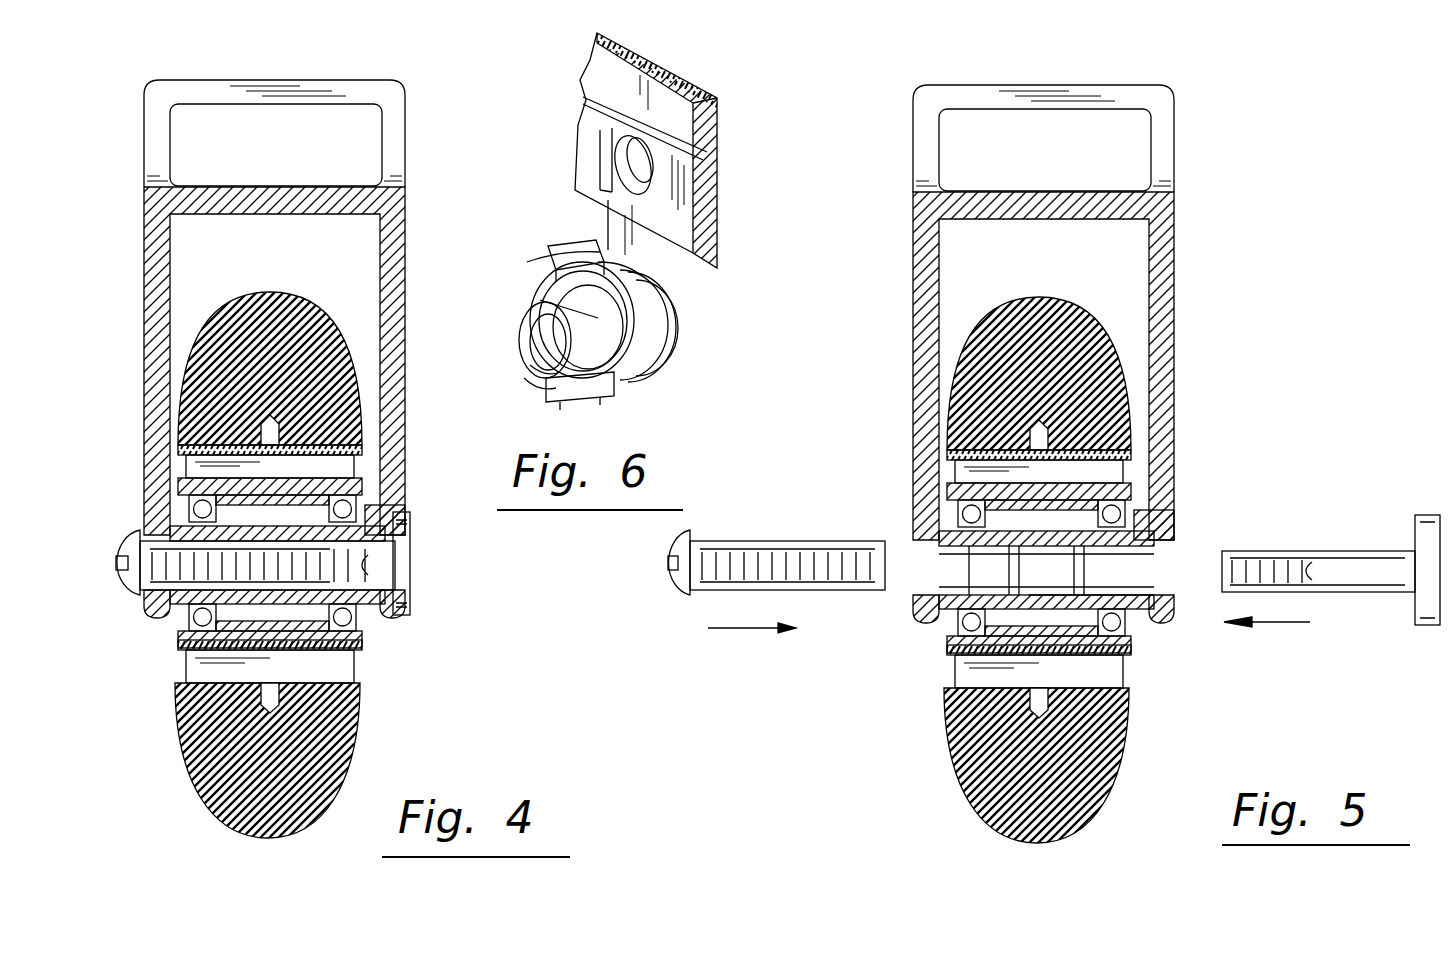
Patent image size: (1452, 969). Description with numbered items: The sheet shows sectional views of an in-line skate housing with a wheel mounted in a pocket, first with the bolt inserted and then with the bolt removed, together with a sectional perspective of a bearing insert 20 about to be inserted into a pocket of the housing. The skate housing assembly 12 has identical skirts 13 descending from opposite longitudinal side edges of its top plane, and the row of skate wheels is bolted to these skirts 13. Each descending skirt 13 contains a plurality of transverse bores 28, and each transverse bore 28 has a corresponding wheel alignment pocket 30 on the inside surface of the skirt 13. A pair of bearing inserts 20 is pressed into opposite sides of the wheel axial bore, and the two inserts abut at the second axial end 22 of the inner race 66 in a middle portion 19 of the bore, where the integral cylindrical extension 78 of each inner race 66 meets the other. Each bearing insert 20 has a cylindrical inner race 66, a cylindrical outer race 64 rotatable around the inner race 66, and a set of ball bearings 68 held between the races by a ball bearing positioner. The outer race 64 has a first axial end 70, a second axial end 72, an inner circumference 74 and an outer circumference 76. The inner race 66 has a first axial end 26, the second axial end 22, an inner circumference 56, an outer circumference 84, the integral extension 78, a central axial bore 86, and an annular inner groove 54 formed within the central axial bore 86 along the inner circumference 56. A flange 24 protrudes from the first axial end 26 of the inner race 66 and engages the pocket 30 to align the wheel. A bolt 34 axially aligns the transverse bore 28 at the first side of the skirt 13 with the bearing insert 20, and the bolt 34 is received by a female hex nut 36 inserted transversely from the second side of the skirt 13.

In FIG. 6, the skate housing assembly 12 is at (652, 60).
In FIG. 6, the skirt 13 is at (712, 138).
In FIG. 5, the middle portion 19 is at (1091, 614).
In FIG. 6, the bearing insert 20 is at (640, 386).
In FIG. 6, the second axial end 22 is at (512, 335).
In FIG. 6, the flange 24 is at (662, 330).
In FIG. 6, the first axial end 26 is at (657, 345).
In FIG. 6, the transverse bore 28 is at (612, 160).
In FIG. 6, the wheel alignment pocket 30 is at (612, 177).
In FIG. 4, the bolt 34 is at (137, 540).
In FIG. 5, the bolt 34 is at (838, 548).
In FIG. 4, the female hex nut 36 is at (411, 549).
In FIG. 5, the female hex nut 36 is at (1325, 552).
In FIG. 5, the annular inner groove 54 is at (1046, 550).
In FIG. 6, the annular inner groove 54 is at (540, 353).
In FIG. 6, the inner circumference 56 is at (530, 390).
In FIG. 6, the outer race 64 is at (608, 262).
In FIG. 6, the inner race 66 is at (520, 366).
In FIG. 6, the ball bearings 68 is at (648, 290).
In FIG. 6, the first axial end 70 is at (600, 248).
In FIG. 6, the second axial end 72 is at (535, 270).
In FIG. 6, the inner circumference 74 is at (528, 300).
In FIG. 6, the outer circumference 76 is at (568, 258).
In FIG. 6, the integral cylindrical extension 78 is at (548, 382).
In FIG. 6, the outer circumference 84 is at (520, 316).
In FIG. 6, the central axial bore 86 is at (592, 349).